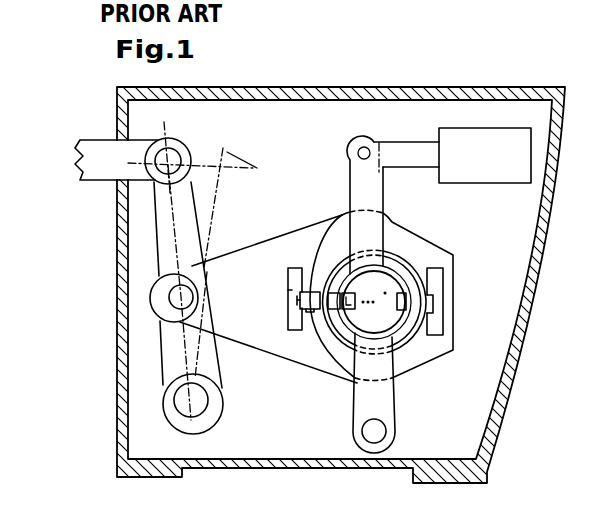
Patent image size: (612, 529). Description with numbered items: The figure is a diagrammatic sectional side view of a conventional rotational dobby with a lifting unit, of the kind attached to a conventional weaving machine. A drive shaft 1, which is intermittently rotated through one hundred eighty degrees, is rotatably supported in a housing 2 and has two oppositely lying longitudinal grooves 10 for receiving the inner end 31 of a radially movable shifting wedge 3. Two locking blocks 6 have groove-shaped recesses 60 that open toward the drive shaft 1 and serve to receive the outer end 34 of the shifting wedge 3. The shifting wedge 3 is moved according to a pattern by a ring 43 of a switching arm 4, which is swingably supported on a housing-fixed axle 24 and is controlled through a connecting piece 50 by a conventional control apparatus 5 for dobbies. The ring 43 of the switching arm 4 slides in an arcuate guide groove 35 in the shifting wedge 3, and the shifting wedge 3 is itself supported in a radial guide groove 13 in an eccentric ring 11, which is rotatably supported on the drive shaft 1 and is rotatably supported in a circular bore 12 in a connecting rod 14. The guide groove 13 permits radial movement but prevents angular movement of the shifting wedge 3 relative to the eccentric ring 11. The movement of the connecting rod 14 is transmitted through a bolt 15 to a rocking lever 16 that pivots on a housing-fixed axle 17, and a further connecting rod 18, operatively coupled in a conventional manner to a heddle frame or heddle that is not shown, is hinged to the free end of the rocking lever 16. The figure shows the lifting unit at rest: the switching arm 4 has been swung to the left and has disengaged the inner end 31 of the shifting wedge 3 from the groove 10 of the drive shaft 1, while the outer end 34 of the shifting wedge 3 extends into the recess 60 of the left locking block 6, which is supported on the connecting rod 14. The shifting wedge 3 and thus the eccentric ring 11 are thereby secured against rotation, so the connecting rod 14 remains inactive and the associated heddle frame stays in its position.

The drive shaft 1 is at (382, 320).
The housing 2 is at (264, 94).
The shifting wedge 3 is at (303, 312).
The switching arm 4 is at (361, 180).
The control apparatus 5 is at (480, 147).
The locking block 6 is at (290, 269).
The longitudinal groove 10 is at (402, 293).
The eccentric ring 11 is at (403, 340).
The circular bore 12 is at (411, 261).
The radial guide groove 13 is at (315, 292).
The connecting rod 14 is at (170, 298).
The bolt 15 is at (153, 285).
The rocking lever 16 is at (175, 347).
The housing-fixed axle 17 is at (187, 398).
The connecting rod 18 is at (108, 151).
The housing-fixed axle 24 is at (368, 438).
The inner end 31 is at (337, 311).
The outer end 34 is at (299, 301).
The arcuate guide groove 35 is at (316, 311).
The ring 43 is at (387, 258).
The connecting piece 50 is at (401, 150).
The groove-shaped recess 60 is at (288, 288).